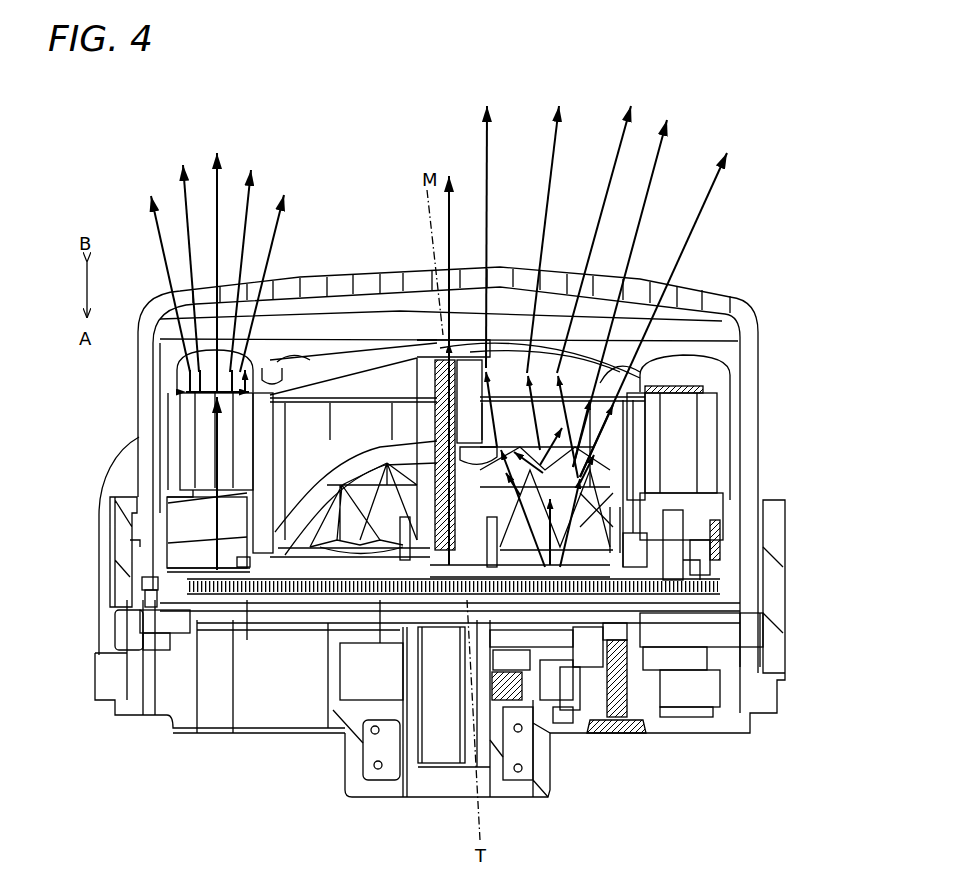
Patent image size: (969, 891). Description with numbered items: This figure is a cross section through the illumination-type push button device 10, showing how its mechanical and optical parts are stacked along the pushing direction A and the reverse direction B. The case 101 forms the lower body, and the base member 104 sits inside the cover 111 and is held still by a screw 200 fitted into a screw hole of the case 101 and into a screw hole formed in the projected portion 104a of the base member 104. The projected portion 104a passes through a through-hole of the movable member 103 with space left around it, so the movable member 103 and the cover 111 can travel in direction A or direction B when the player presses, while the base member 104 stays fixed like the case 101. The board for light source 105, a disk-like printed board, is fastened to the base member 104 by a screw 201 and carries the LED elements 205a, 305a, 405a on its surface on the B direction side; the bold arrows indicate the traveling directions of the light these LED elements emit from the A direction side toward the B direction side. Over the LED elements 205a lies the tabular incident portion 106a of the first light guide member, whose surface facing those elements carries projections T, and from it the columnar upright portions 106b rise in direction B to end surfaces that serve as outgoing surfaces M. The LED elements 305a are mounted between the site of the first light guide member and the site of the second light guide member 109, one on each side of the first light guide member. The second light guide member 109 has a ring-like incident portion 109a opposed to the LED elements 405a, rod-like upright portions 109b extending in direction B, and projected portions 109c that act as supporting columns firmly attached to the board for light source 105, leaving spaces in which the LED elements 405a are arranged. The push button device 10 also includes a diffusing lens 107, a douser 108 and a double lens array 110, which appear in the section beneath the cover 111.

The push button device 10 is at (767, 226).
The case 101 is at (578, 735).
The movable member 103 is at (737, 607).
The base member 104 is at (223, 620).
The projected portion 104a is at (600, 667).
The board for light source 105 is at (283, 602).
The incident portion 106a is at (390, 600).
The upright portions 106b is at (445, 340).
The diffusing lens 107 is at (353, 443).
The douser 108 is at (207, 447).
The second light guide member 109 is at (695, 513).
The incident portion 109a is at (193, 520).
The upright portions 109b is at (108, 652).
The projected portions 109c is at (690, 573).
The double lens array 110 is at (178, 399).
The cover 111 is at (362, 278).
The screw 200 is at (620, 735).
The screw 201 is at (700, 555).
The LED elements 205a is at (437, 600).
The LED elements 305a is at (330, 735).
The LED elements 405a is at (215, 627).